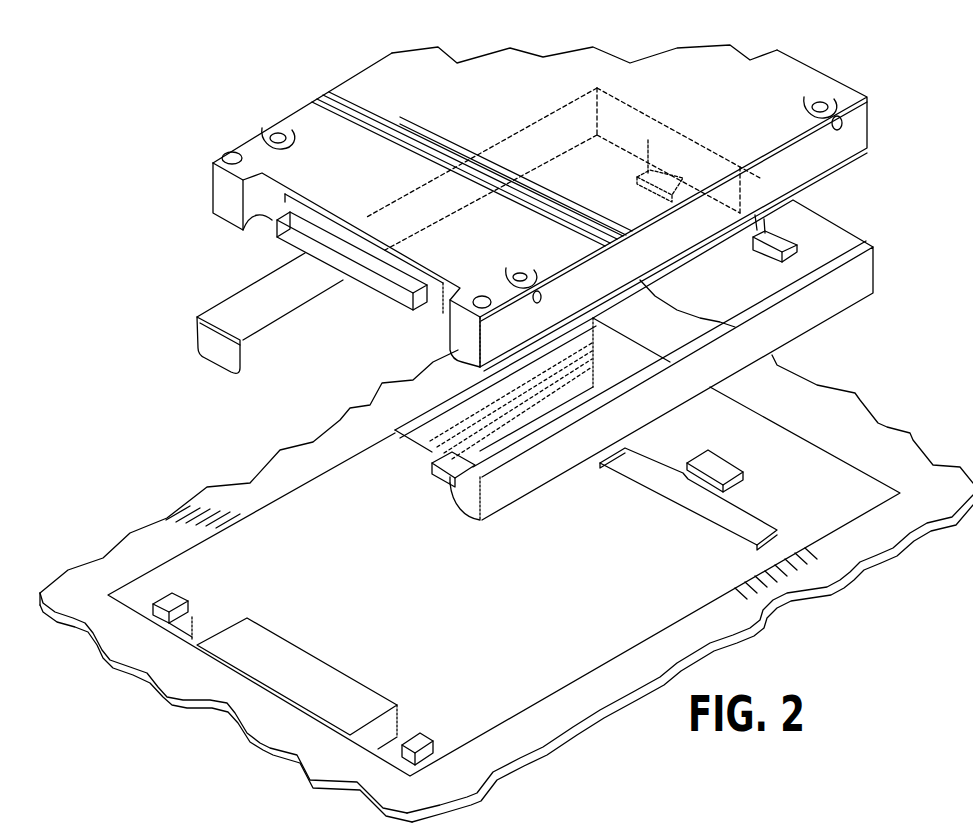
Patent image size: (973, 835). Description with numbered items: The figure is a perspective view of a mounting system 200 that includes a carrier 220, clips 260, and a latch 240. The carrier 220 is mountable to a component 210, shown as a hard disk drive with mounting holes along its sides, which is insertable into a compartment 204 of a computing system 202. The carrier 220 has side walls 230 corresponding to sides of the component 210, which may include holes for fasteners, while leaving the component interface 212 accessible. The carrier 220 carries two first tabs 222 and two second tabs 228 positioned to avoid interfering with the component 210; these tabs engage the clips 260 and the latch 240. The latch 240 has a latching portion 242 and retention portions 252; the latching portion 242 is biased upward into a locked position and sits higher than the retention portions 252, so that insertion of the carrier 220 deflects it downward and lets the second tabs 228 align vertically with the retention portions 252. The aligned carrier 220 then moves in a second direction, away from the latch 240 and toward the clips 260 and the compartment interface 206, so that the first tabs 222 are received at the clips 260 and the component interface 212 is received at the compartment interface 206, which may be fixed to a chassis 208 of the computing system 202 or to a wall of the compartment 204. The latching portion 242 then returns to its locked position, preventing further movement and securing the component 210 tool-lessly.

The mounting system 200 is at (130, 103).
The computing system 202 is at (145, 487).
The compartment 204 is at (272, 530).
The compartment interface 206 is at (315, 670).
The chassis 208 is at (70, 583).
The component 210 is at (312, 103).
The component interface 212 is at (290, 240).
The carrier 220 is at (852, 232).
The first tabs 222 is at (200, 328).
The second tabs 228 is at (640, 190).
The side walls 230 is at (818, 302).
The latch 240 is at (655, 522).
The latching portion 242 is at (715, 468).
The retention portion 252 is at (622, 462).
The clips 260 is at (185, 598).